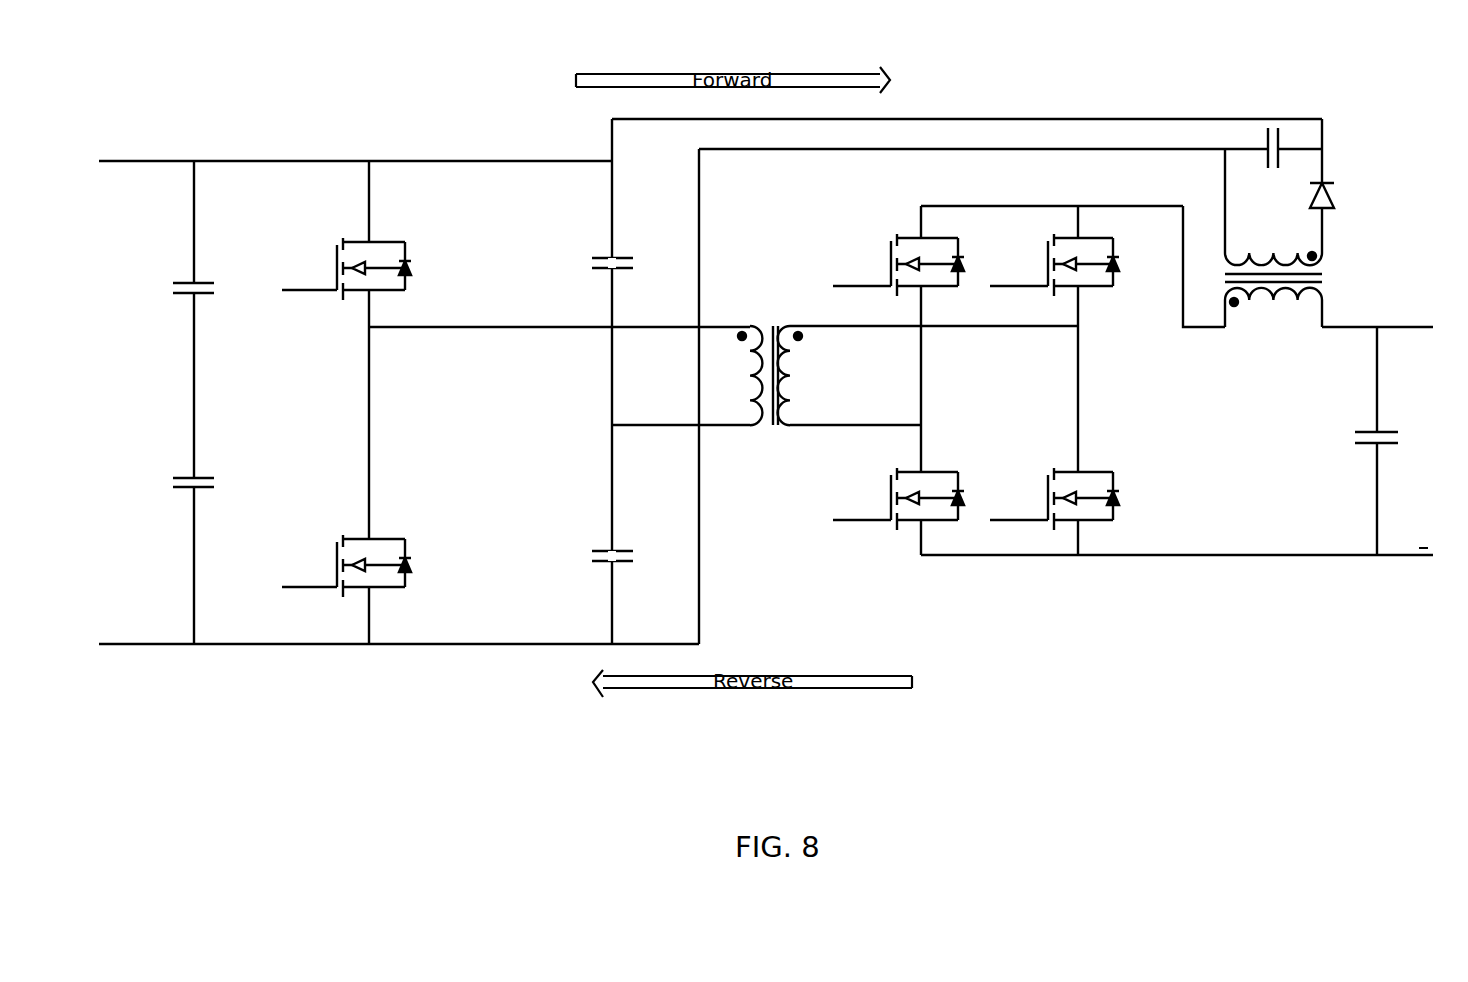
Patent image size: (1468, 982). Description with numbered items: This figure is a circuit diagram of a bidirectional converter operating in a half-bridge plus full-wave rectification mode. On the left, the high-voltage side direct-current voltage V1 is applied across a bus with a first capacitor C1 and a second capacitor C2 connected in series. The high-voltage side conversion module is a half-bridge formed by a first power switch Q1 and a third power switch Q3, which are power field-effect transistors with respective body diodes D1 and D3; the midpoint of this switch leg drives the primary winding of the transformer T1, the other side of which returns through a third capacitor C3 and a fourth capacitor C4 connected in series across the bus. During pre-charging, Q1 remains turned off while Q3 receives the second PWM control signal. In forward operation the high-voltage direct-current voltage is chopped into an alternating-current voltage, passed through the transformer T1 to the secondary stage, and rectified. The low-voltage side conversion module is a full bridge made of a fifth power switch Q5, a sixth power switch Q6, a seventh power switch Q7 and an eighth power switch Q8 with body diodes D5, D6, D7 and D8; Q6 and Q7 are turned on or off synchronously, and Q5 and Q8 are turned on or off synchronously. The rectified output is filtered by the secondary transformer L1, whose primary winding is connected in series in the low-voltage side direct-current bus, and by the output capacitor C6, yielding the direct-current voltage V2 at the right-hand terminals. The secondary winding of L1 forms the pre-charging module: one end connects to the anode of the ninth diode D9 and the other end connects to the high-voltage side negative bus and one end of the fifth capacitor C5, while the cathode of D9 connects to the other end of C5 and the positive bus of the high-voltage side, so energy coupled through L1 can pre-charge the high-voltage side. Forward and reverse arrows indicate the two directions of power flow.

The high-voltage side direct-current voltage V1 is at (122, 597).
The first capacitor C1 is at (209, 284).
The second capacitor C2 is at (209, 479).
The first power switch Q1 is at (343, 263).
The first diode D1 is at (423, 266).
The third power switch Q3 is at (343, 558).
The third diode D3 is at (423, 563).
The third capacitor C3 is at (629, 265).
The fourth capacitor C4 is at (629, 558).
The transformer T1 is at (770, 359).
The seventh power switch Q7 is at (895, 259).
The seventh diode D7 is at (976, 262).
The eighth power switch Q8 is at (1059, 252).
The eighth diode D8 is at (1132, 262).
The fifth power switch Q5 is at (895, 490).
The fifth diode D5 is at (976, 496).
The sixth power switch Q6 is at (1059, 483).
The sixth diode D6 is at (1132, 496).
The fifth capacitor C5 is at (1273, 158).
The ninth diode D9 is at (1340, 186).
The secondary transformer L1 is at (1258, 238).
The output capacitor C6 is at (1360, 441).
The direct-current voltage V2 is at (1422, 439).